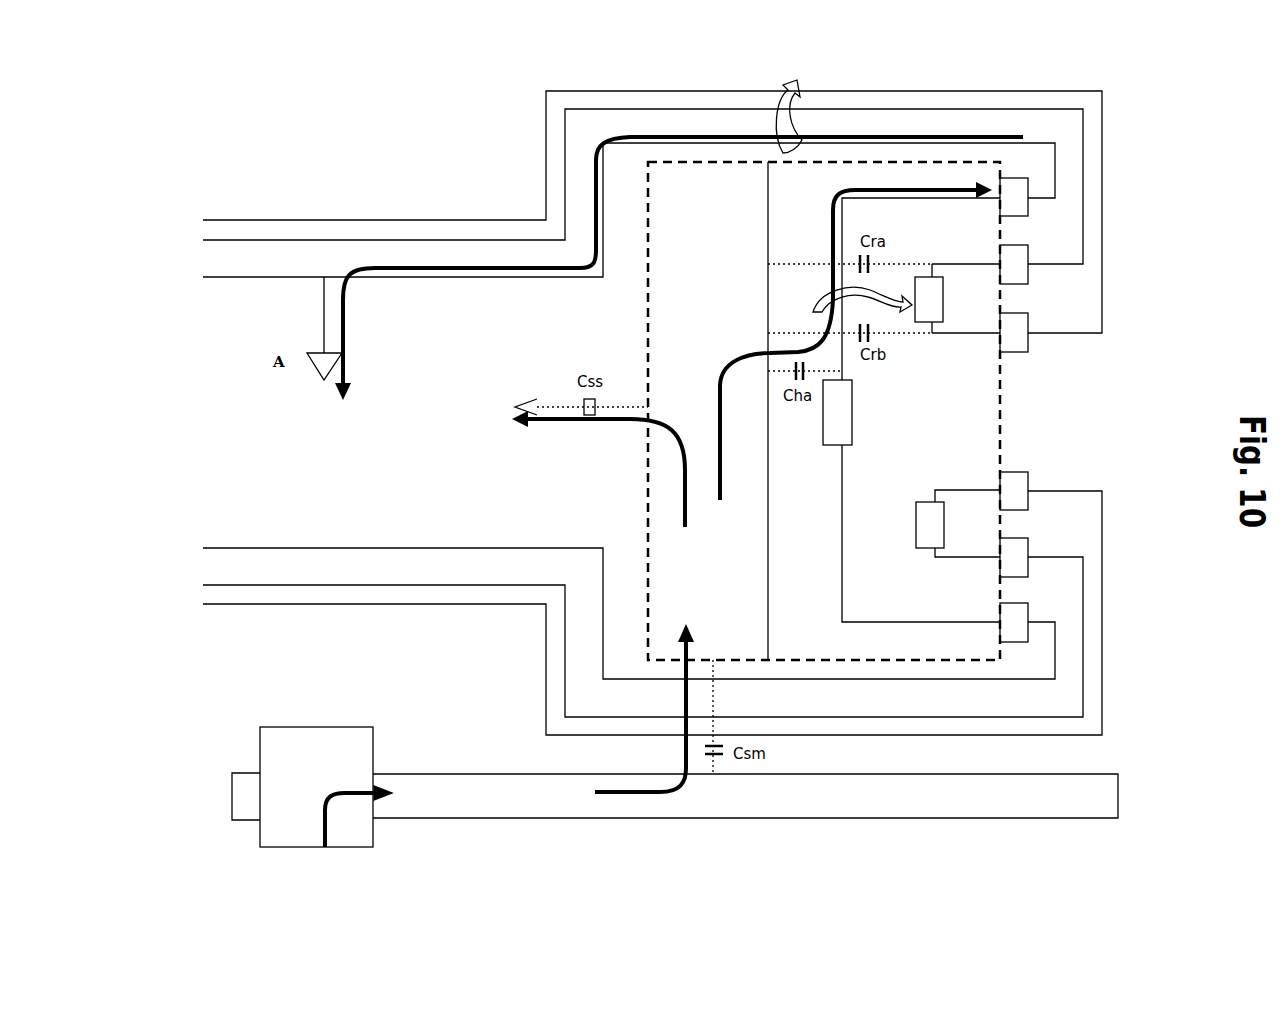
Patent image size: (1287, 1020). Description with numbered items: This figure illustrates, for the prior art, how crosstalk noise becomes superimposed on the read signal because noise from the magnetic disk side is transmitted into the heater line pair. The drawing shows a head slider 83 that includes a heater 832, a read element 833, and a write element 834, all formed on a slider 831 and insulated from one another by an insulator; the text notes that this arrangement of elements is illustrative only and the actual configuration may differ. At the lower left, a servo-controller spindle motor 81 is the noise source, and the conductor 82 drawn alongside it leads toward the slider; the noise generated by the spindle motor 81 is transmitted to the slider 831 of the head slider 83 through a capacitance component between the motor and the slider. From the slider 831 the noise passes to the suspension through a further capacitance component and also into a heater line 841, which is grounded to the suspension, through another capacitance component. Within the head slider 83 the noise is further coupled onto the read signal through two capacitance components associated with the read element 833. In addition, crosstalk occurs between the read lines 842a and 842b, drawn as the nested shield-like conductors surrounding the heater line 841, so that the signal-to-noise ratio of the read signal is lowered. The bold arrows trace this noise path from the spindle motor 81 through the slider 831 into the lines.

The servo-controller spindle motor 81 is at (335, 727).
The transmission line 82 is at (500, 774).
The head slider 83 is at (1000, 385).
The slider 831 is at (768, 512).
The heater 832 is at (852, 410).
The read element 833 is at (943, 305).
The write element 834 is at (915, 527).
The heater line 841 is at (541, 279).
The read line 842a is at (564, 176).
The read line 842b is at (546, 122).